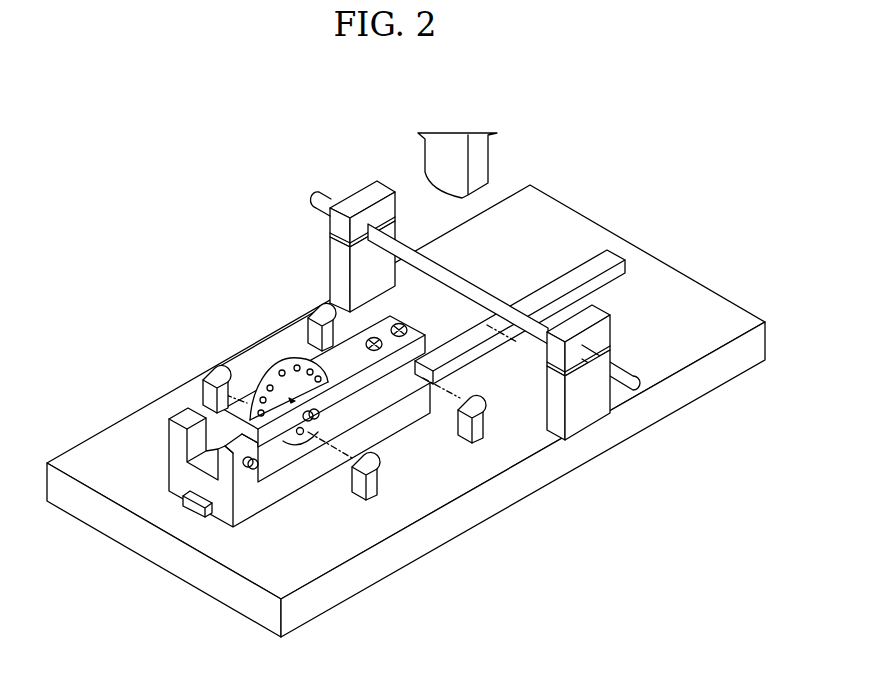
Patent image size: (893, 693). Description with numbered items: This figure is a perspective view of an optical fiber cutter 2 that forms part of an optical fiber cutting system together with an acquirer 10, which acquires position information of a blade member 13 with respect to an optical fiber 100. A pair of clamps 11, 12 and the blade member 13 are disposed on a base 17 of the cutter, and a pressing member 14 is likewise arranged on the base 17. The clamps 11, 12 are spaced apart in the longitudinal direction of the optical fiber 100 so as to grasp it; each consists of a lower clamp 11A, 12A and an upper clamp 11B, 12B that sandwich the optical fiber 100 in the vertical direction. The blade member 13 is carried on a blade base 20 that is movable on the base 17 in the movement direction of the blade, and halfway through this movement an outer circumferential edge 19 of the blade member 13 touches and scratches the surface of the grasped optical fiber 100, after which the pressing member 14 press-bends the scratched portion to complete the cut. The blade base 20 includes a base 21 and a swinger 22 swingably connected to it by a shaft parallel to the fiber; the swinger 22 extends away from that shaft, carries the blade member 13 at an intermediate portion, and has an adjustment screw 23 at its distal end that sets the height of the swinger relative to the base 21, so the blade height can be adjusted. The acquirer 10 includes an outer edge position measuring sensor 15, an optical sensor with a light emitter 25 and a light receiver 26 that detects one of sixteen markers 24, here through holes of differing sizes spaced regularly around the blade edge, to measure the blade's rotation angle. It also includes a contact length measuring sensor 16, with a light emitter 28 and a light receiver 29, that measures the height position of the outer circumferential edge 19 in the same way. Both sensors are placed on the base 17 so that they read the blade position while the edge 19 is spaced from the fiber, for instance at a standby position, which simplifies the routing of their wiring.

The optical fiber cutter 2 is at (133, 152).
The acquirer 10 is at (406, 428).
The clamp 11 is at (332, 207).
The lower clamp 11A is at (337, 268).
The upper clamp 11B is at (391, 190).
The clamp 12 is at (645, 369).
The lower clamp 12A is at (593, 408).
The upper clamp 12B is at (604, 333).
The blade member 13 is at (261, 356).
The pressing member 14 is at (490, 158).
The outer edge position measuring sensor 15 is at (391, 507).
The contact length measuring sensor 16 is at (500, 454).
The base 17 is at (327, 590).
The outer circumferential edge 19 is at (285, 366).
The blade base 20 is at (293, 454).
The base 21 is at (250, 505).
The swinger 22 is at (426, 330).
The adjustment screw 23 is at (394, 324).
The marker 24 is at (298, 435).
The light emitter 25 is at (376, 460).
The light receiver 26 is at (204, 380).
The light emitter 28 is at (466, 399).
The light receiver 29 is at (366, 339).
The optical fiber 100 is at (500, 300).